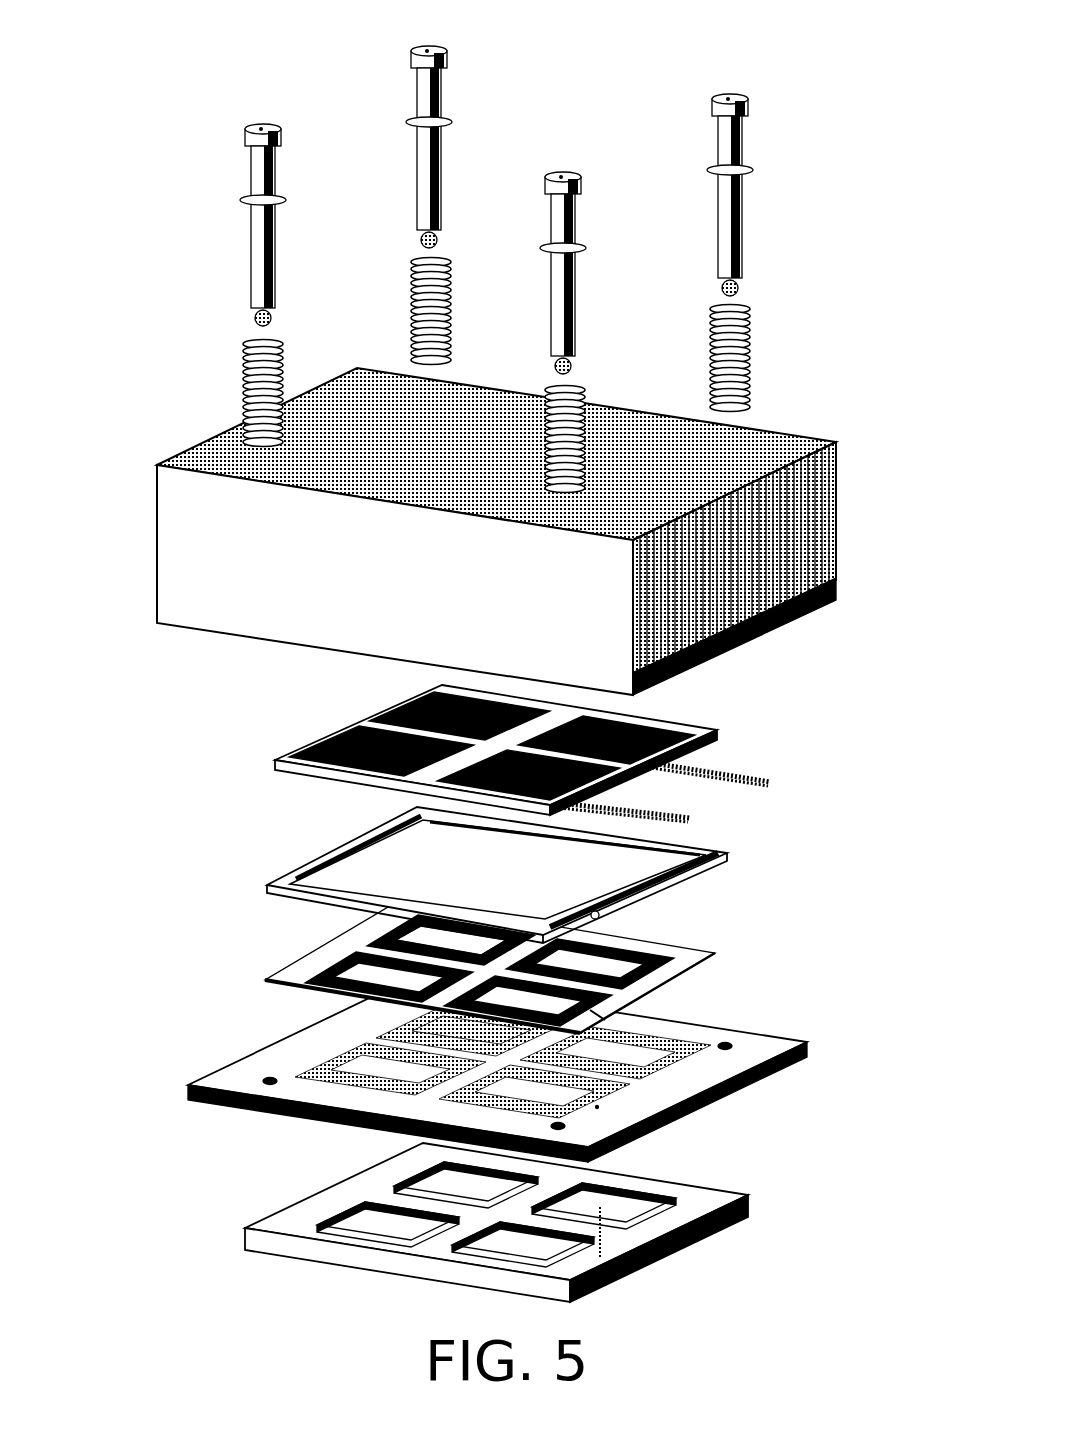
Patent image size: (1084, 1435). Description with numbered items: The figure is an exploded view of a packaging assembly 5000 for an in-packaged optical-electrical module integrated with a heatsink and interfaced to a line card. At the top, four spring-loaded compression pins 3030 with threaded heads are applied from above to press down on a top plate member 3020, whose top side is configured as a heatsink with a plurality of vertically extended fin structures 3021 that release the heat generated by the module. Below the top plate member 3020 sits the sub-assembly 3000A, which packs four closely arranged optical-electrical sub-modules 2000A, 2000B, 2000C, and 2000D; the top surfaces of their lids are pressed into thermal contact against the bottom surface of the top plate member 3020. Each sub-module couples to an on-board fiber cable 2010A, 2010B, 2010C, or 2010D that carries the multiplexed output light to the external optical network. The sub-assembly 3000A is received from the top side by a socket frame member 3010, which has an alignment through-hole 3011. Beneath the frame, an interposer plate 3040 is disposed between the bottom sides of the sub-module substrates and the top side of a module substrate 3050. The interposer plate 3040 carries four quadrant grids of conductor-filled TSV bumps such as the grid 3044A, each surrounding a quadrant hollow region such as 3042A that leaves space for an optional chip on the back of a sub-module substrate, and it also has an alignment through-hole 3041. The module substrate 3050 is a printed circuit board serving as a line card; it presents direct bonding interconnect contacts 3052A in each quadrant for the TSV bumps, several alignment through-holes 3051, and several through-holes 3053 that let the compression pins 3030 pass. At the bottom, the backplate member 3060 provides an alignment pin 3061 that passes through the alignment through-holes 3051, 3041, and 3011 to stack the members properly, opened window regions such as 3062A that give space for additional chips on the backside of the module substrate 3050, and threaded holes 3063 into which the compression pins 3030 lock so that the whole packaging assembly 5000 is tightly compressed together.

The packaging assembly 5000 is at (316, 34).
The spring-loaded compression pins 3030 is at (243, 372).
The top plate member 3020 is at (502, 531).
The fin structures 3021 is at (813, 470).
The sub-assembly 3000A is at (493, 770).
The sub-module 2000A is at (448, 712).
The sub-module 2000B is at (623, 737).
The sub-module 2000C is at (535, 779).
The sub-module 2000D is at (398, 757).
The on-board fiber cable 2010A is at (765, 780).
The on-board fiber cable 2010B is at (760, 783).
The on-board fiber cable 2010C is at (685, 821).
The on-board fiber cable 2010D is at (688, 818).
The socket frame member 3010 is at (417, 875).
The alignment through-hole 3011 is at (595, 915).
The interposer plate 3040 is at (433, 966).
The quadrant hollow region 3042A is at (450, 941).
The quadrant grid of TSV bumps 3044A is at (470, 946).
The alignment through-hole 3041 is at (597, 1015).
The module substrate 3050 is at (437, 1078).
The direct bonding interconnect contacts 3052A is at (390, 1033).
The alignment through-holes 3051 is at (597, 1107).
The through-holes 3053 is at (573, 1126).
The backplate member 3060 is at (435, 1229).
The opened window region 3062A is at (460, 1183).
The alignment pin 3061 is at (602, 1233).
The threaded holes 3063 is at (597, 1285).